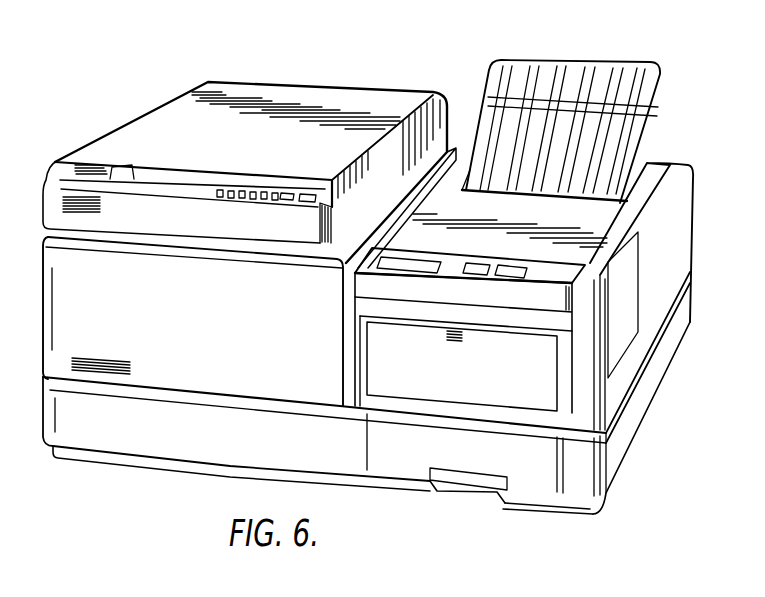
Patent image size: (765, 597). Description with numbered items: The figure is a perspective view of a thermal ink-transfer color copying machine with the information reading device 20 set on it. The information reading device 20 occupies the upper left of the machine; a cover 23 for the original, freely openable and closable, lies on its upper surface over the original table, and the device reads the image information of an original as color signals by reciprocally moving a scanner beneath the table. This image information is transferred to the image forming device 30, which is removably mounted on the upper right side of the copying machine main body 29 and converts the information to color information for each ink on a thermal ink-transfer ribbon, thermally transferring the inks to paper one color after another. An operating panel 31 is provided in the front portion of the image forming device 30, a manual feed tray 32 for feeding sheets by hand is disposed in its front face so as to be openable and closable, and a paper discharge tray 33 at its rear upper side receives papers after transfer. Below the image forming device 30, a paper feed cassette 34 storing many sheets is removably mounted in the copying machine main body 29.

The information reading device 20 is at (351, 91).
The cover 23 is at (147, 122).
The copying machine main body 29 is at (205, 440).
The image forming device 30 is at (689, 178).
The operating panel 31 is at (457, 266).
The manual feed tray 32 is at (380, 345).
The paper discharge tray 33 is at (600, 70).
The paper feed cassette 34 is at (412, 457).